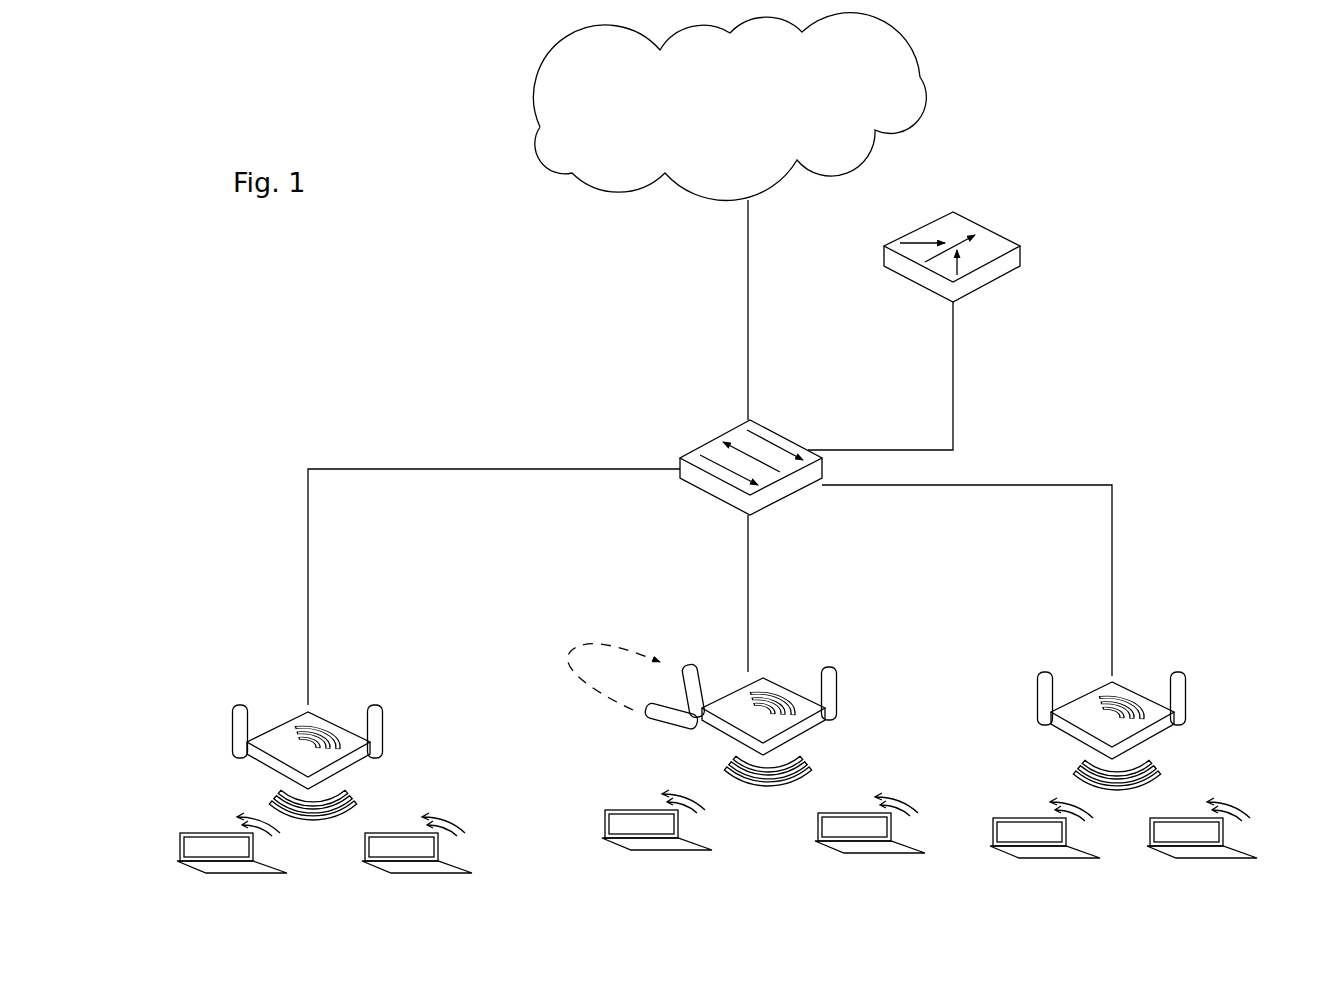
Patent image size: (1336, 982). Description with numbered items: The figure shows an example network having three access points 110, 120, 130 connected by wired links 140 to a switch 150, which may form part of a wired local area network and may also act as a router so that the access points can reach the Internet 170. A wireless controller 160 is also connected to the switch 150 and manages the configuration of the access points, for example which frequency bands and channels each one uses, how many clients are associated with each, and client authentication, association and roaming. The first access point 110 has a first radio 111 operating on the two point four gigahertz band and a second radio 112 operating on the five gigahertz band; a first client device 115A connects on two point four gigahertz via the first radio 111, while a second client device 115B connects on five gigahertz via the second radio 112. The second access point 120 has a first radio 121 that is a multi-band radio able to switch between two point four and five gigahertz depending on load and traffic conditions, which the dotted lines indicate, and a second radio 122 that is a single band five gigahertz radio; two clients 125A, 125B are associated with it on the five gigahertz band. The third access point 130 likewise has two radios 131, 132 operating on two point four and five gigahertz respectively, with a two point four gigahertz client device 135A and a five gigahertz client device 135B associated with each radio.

The access point 110 is at (245, 755).
The first radio 111 is at (233, 725).
The second radio 112 is at (383, 728).
The first client device 115A is at (212, 855).
The second client device 115B is at (411, 855).
The second access point 120 is at (802, 737).
The first radio 121 is at (687, 730).
The second radio 122 is at (828, 668).
The client 125A is at (650, 832).
The client 125B is at (863, 836).
The access point 130 is at (1157, 735).
The radio 131 is at (1037, 698).
The radio 132 is at (1187, 702).
The 2.4 GHz client device 135A is at (1025, 841).
The 5 GHz client device 135B is at (1195, 841).
The wired links 140 is at (418, 468).
The switch 150 is at (703, 445).
The wireless controller 160 is at (990, 274).
The Internet 170 is at (828, 102).